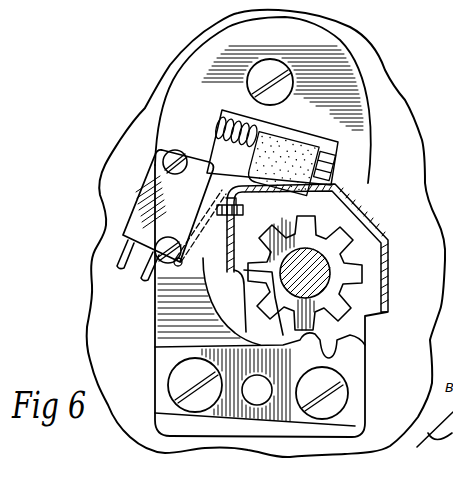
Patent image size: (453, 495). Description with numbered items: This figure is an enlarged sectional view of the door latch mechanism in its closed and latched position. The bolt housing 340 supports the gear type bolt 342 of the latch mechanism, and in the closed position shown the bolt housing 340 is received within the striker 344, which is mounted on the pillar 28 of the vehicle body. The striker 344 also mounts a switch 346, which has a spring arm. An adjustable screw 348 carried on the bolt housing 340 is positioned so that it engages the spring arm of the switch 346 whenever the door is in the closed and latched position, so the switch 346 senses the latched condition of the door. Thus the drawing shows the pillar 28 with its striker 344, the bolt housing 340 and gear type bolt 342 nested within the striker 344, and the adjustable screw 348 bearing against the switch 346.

The pillar 28 is at (400, 128).
The striker 344 is at (350, 88).
The switch 346 is at (147, 197).
The adjustable screw 348 is at (209, 169).
The bolt housing 340 is at (368, 214).
The gear type bolt 342 is at (355, 290).